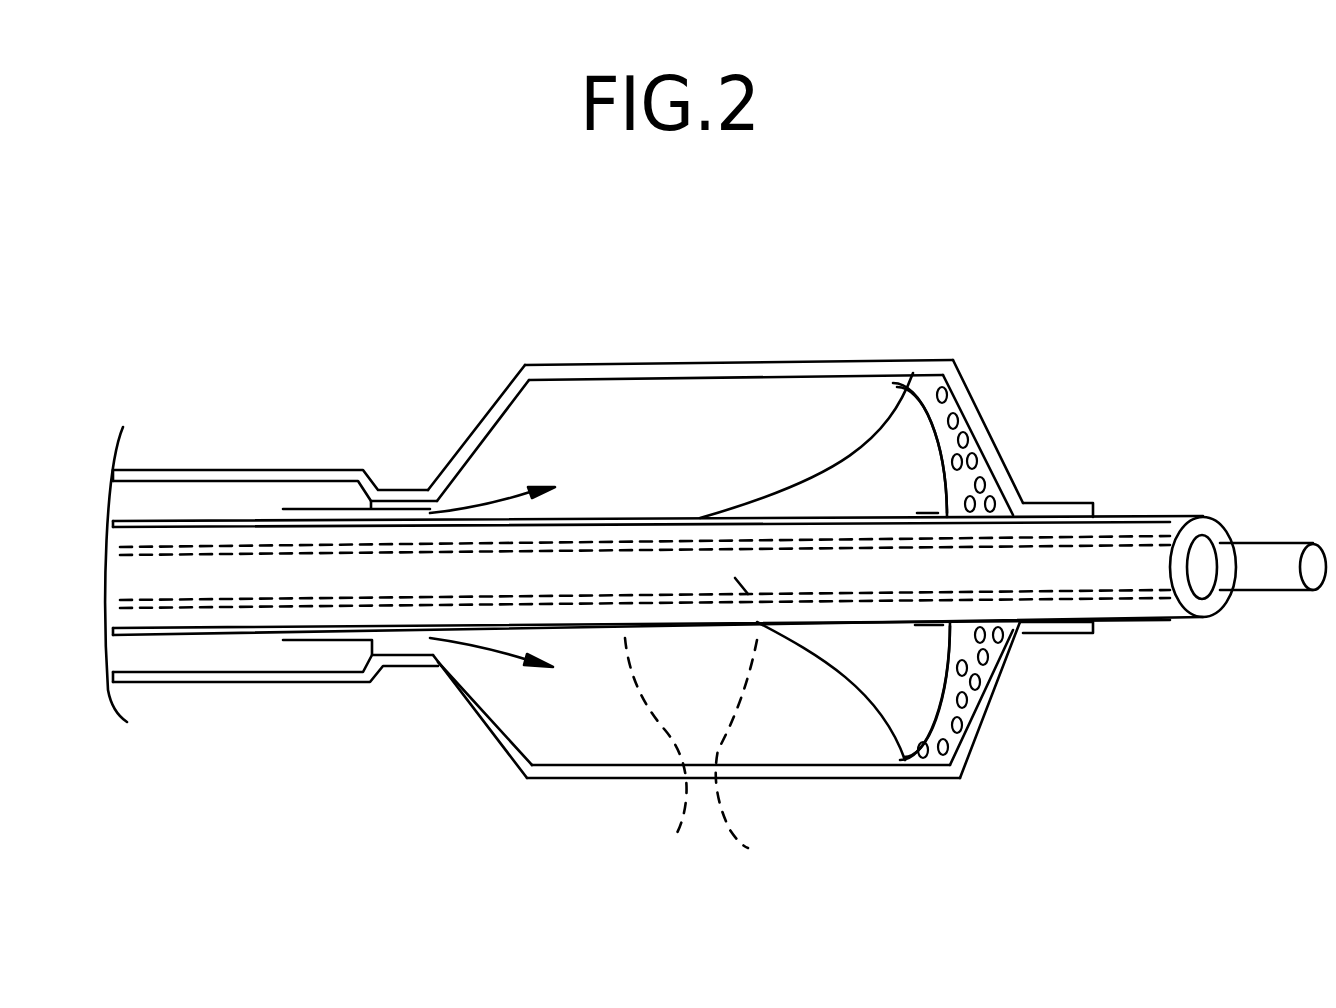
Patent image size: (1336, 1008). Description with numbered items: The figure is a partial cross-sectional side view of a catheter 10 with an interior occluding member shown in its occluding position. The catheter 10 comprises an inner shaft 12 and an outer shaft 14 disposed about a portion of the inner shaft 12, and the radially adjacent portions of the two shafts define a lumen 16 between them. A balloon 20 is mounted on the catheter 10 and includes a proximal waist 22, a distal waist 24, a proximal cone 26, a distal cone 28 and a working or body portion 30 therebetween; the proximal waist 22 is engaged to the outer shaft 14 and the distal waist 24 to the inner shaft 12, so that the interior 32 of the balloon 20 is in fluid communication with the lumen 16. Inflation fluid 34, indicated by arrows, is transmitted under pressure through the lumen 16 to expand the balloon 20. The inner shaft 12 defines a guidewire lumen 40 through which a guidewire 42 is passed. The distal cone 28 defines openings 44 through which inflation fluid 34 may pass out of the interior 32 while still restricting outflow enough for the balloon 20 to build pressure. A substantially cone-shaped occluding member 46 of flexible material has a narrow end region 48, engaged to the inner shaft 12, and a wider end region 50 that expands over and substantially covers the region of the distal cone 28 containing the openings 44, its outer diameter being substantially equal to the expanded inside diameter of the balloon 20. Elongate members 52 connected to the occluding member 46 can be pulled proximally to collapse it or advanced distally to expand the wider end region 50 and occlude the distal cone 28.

The catheter 10 is at (513, 308).
The inner shaft 12 is at (173, 537).
The outer shaft 14 is at (290, 683).
The lumen 16 is at (155, 652).
The balloon 20 is at (933, 358).
The proximal waist 22 is at (397, 677).
The distal waist 24 is at (1077, 507).
The proximal cone 26 is at (463, 437).
The distal cone 28 is at (980, 732).
The body portion 30 is at (583, 364).
The interior 32 is at (812, 390).
The inflation fluid 34 is at (340, 517).
The guidewire lumen 40 is at (656, 752).
The guidewire 42 is at (749, 728).
The openings 44 is at (980, 437).
The occluding member 46 is at (947, 410).
The narrow end region 48 is at (948, 518).
The wider end region 50 is at (873, 380).
The elongate members 52 is at (810, 490).